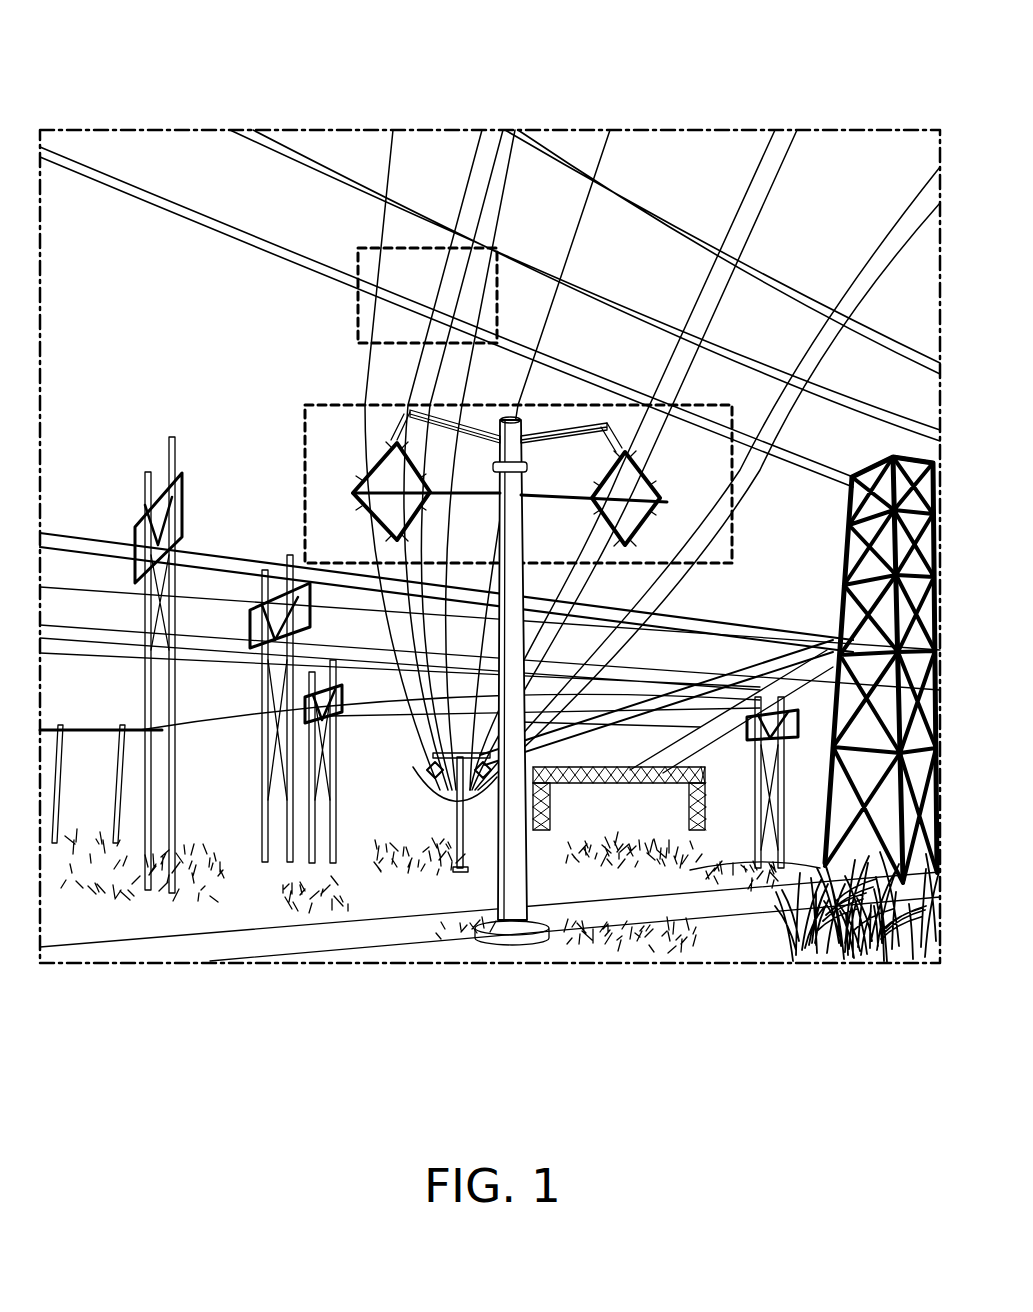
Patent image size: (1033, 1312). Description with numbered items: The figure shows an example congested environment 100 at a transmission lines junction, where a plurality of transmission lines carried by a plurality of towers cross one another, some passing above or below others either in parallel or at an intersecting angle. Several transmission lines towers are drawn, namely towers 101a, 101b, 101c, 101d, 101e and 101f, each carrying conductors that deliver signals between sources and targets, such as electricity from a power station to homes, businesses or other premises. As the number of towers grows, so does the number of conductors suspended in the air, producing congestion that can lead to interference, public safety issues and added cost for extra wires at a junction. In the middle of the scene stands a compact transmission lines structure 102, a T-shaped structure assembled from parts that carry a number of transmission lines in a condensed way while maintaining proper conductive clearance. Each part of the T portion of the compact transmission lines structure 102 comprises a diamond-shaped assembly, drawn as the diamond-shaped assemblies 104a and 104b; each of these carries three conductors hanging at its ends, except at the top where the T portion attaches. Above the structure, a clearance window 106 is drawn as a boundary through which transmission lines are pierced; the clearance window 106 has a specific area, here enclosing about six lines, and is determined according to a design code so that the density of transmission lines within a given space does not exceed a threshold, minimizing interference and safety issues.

The environment 100 is at (124, 54).
The compact transmission lines structure 102 is at (505, 659).
The diamond-shaped assembly 104a is at (372, 478).
The diamond-shaped assembly 104b is at (632, 462).
The clearance window 106 is at (413, 248).
The tower 101a is at (173, 435).
The tower 101b is at (290, 558).
The tower 101c is at (315, 775).
The tower 101d is at (780, 690).
The tower 101e is at (850, 520).
The tower 101f is at (632, 770).